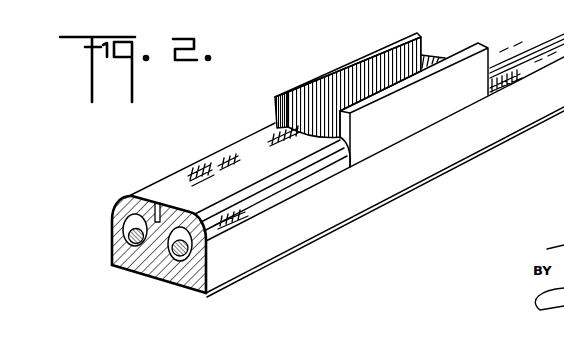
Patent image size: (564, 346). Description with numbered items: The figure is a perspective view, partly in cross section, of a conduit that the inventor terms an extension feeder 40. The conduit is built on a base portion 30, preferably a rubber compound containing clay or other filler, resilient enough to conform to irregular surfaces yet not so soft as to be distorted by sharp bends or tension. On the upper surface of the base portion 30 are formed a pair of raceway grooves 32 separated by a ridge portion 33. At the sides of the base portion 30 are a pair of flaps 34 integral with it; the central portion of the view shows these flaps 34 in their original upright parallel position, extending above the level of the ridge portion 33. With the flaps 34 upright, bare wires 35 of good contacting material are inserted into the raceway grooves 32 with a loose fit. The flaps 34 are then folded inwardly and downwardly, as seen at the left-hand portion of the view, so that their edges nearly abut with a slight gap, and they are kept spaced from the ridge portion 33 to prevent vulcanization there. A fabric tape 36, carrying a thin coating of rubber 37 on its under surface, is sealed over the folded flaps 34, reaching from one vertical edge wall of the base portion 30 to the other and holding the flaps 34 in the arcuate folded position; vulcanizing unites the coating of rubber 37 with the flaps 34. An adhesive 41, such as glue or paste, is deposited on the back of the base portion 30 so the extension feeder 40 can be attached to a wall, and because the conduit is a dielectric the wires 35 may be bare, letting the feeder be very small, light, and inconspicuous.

The base portion 30 is at (168, 280).
The raceway grooves 32 is at (122, 206).
The ridge portion 33 is at (160, 218).
The flaps 34 is at (335, 70).
The bare wires 35 is at (122, 248).
The fabric tape 36 is at (245, 147).
The coating of rubber 37 is at (135, 190).
The extension feeder 40 is at (389, 198).
The adhesive 41 is at (143, 273).